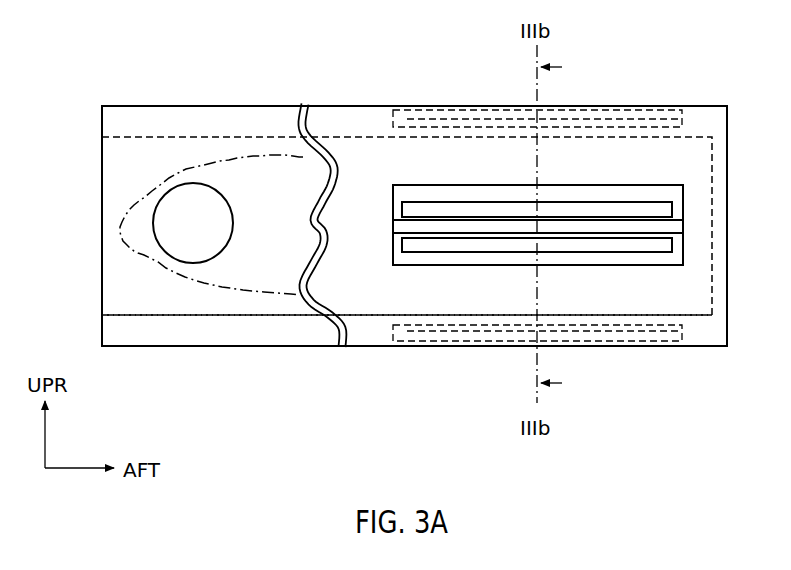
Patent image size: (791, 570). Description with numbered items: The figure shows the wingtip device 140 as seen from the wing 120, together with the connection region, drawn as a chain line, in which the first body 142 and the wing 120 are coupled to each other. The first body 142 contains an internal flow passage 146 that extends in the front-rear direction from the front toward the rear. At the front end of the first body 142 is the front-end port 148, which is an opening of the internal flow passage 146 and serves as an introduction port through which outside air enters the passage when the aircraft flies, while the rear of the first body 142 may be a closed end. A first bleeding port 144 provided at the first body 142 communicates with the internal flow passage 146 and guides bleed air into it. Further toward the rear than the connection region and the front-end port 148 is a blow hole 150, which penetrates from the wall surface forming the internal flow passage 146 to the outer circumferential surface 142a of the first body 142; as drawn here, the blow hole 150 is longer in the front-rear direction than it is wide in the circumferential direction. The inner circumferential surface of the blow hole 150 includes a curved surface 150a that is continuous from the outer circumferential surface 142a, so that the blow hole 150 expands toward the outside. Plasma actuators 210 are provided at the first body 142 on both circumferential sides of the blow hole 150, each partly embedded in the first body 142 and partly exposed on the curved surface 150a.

The wingtip device 140 is at (158, 105).
The first body 142 is at (212, 106).
The outer circumferential surface 142a is at (262, 106).
The first bleeding port 144 is at (153, 235).
The internal flow passage 146 is at (160, 311).
The front-end port 148 is at (102, 150).
The wing 120 is at (143, 199).
The blow hole 150 is at (673, 225).
The curved surface 150a is at (612, 198).
The plasma actuator 210 is at (471, 210).